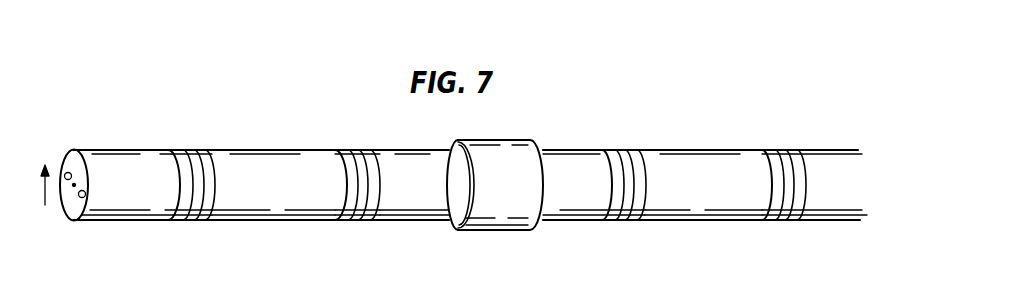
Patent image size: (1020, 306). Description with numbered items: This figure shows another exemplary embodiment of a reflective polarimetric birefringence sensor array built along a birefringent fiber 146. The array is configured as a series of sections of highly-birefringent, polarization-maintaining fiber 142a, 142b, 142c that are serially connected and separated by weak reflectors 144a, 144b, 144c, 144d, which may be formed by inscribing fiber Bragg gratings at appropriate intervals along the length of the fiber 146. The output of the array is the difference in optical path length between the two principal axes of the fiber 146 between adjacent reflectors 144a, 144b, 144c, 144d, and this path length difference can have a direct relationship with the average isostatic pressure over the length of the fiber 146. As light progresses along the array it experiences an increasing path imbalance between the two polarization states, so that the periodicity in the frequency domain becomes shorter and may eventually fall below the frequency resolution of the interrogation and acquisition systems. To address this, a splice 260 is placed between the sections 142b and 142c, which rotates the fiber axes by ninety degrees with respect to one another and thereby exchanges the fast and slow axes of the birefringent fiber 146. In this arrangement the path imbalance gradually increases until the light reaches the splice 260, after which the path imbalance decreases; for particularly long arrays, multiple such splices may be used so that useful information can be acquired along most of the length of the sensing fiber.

The birefringent fiber 146 is at (127, 147).
The section of highly-birefringent fiber 142a is at (311, 197).
The section of highly-birefringent fiber 142b is at (452, 197).
The section of highly-birefringent fiber 142c is at (735, 197).
The weak reflector 144a is at (195, 200).
The weak reflector 144b is at (363, 200).
The weak reflector 144c is at (625, 200).
The weak reflector 144d is at (785, 200).
The splice 260 is at (505, 138).